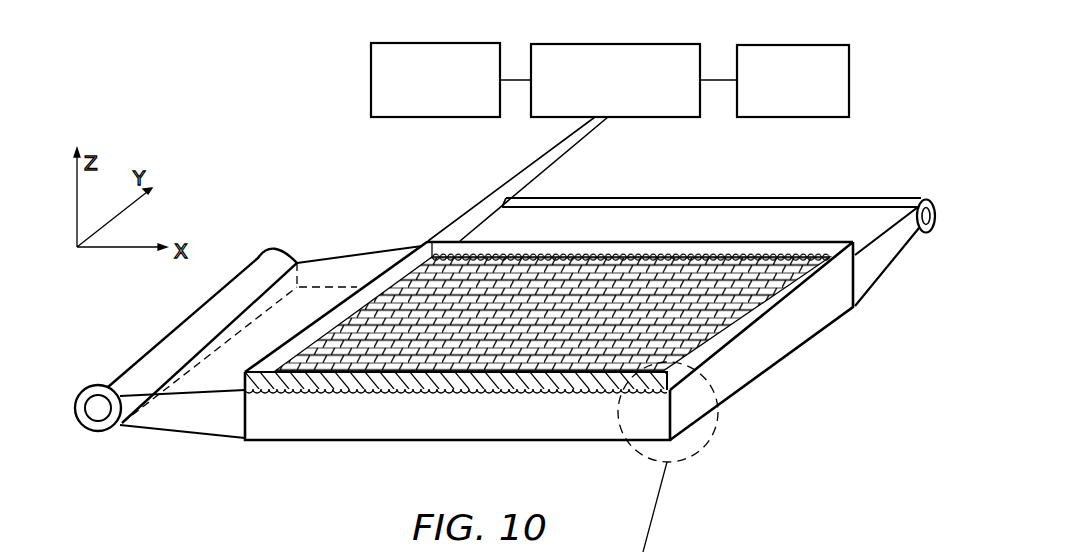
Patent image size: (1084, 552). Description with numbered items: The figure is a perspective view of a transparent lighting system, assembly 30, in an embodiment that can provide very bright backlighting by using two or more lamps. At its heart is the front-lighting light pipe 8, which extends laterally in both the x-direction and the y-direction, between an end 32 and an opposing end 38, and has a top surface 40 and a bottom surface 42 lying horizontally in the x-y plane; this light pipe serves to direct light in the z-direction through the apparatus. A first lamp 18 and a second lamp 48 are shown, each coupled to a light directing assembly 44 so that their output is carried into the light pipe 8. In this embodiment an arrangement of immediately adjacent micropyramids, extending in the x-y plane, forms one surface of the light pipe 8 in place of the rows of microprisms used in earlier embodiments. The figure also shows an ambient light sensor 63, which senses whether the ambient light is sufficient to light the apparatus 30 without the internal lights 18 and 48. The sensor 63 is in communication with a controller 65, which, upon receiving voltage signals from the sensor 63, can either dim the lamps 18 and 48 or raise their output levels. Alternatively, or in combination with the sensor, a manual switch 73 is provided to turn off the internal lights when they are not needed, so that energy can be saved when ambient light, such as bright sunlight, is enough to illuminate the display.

The front-lighting light pipe 8 is at (752, 360).
The first lamp 18 is at (95, 412).
The assembly 30 is at (324, 183).
The end 32 is at (245, 420).
The end 38 is at (797, 242).
The top surface 40 is at (458, 438).
The bottom surface 42 is at (348, 390).
The light directing assembly 44 is at (505, 234).
The second lamp 48 is at (928, 202).
The ambient light sensor 63 is at (793, 45).
The controller 65 is at (620, 44).
The manual switch 73 is at (445, 43).